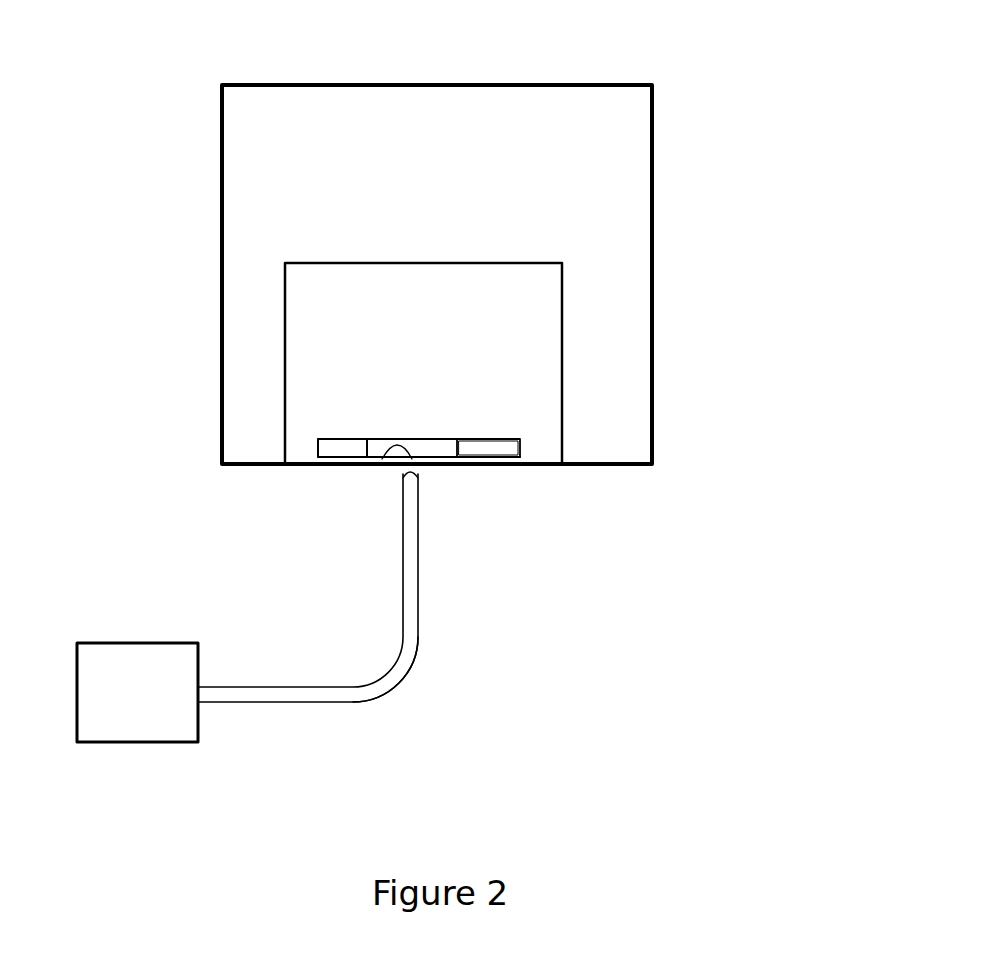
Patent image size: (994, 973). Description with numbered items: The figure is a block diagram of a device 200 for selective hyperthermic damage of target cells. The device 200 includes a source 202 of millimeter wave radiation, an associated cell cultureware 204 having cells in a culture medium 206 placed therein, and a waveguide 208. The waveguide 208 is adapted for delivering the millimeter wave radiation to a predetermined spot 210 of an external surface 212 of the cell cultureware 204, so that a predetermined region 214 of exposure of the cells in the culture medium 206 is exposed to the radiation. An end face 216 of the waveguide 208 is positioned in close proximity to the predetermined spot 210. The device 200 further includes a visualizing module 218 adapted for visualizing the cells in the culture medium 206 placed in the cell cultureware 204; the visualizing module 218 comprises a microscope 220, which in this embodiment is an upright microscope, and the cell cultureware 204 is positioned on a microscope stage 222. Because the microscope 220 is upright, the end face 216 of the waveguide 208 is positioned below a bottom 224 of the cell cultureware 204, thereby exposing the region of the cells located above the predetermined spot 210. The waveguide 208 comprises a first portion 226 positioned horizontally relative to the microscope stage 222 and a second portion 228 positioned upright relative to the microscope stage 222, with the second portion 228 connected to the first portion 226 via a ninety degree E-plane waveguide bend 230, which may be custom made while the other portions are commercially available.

The device 200 is at (637, 67).
The source 202 is at (137, 692).
The cell cultureware 204 is at (520, 442).
The culture medium 206 is at (520, 448).
The waveguide 208 is at (365, 646).
The predetermined spot 210 is at (398, 468).
The external surface 212 is at (480, 470).
The predetermined region of exposure 214 is at (386, 467).
The end face 216 is at (423, 470).
The visualizing module 218 is at (437, 274).
The microscope 220 is at (423, 363).
The microscope stage 222 is at (517, 470).
The bottom 224 is at (512, 452).
The first portion 226 is at (302, 702).
The second portion 228 is at (420, 567).
The 90 degree E-plane waveguide bend 230 is at (393, 677).